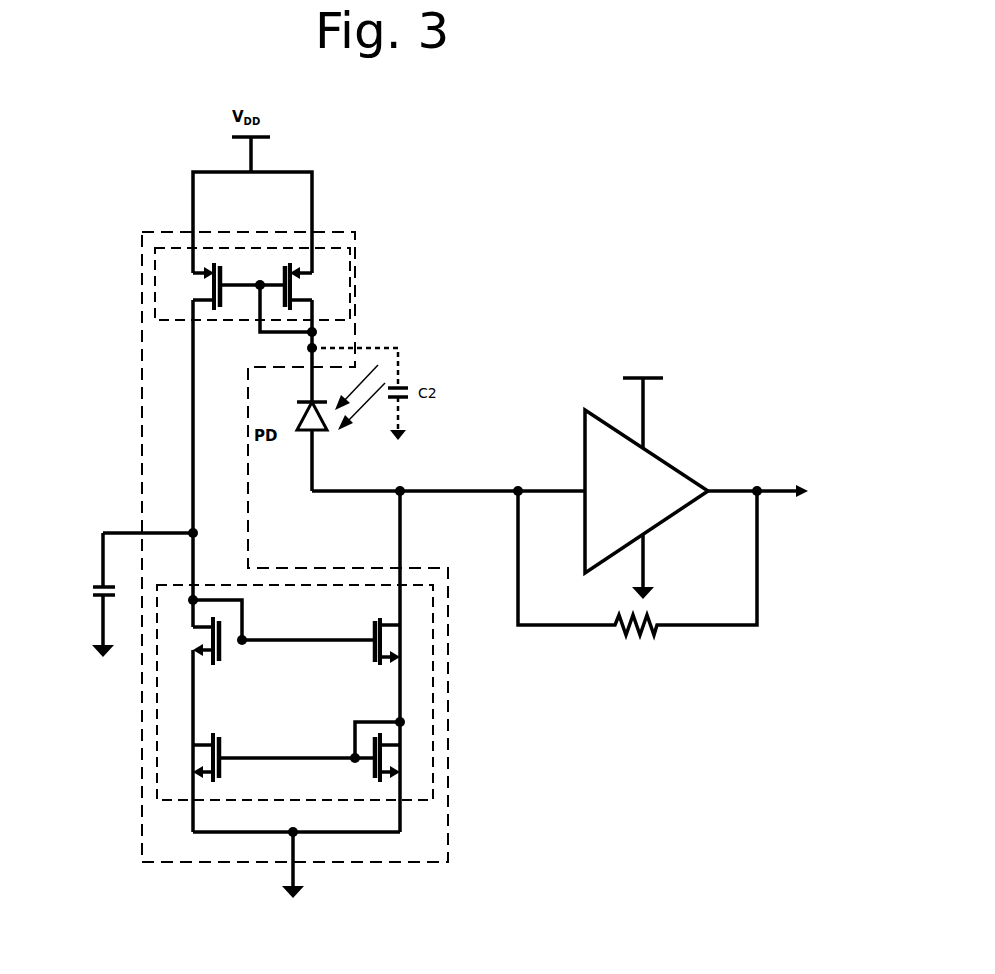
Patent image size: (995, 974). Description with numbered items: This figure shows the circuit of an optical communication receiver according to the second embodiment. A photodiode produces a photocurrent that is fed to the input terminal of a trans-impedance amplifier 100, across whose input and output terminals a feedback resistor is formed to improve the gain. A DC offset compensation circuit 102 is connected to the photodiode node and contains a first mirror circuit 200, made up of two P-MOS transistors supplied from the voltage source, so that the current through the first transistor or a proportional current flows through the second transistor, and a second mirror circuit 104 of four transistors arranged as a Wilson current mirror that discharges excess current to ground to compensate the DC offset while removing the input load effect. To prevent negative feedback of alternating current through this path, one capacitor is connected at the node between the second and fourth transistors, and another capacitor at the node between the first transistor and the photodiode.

The transimpedance amplifier 100 is at (667, 458).
The DC offset compensation circuit 102 is at (142, 407).
The NMOS current mirror circuit 104 is at (433, 742).
The first mirror circuit 200 is at (353, 290).